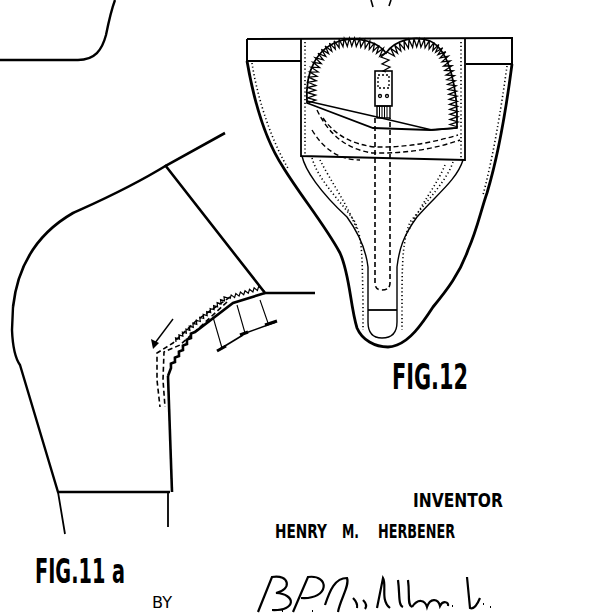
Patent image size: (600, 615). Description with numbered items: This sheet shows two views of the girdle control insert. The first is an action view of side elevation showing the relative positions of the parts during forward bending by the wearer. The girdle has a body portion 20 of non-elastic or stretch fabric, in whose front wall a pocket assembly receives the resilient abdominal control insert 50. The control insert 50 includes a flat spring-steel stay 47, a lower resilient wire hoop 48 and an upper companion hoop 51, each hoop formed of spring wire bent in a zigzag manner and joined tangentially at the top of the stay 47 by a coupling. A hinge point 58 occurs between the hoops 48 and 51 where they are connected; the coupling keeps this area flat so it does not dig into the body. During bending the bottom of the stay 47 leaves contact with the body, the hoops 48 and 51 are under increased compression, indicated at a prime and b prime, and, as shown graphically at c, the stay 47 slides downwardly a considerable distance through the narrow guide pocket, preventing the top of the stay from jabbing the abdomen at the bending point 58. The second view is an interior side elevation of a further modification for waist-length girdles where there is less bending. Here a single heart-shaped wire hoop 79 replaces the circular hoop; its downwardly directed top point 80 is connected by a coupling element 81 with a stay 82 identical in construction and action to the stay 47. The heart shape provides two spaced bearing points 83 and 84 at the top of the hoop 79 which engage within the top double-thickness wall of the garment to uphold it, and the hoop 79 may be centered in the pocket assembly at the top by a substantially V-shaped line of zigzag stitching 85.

In FIG. 11A, the body portion 20 is at (121, 216).
In FIG. 11A, the stay 47 is at (173, 366).
In FIG. 11A, the lower resilient wire hoop 48 is at (208, 307).
In FIG. 11A, the control insert 50 is at (215, 285).
In FIG. 11A, the upper companion hoop 51 is at (258, 285).
In FIG. 11A, the hinge point 58 is at (230, 296).
In FIG. 12, the heart-shaped wire hoop 79 is at (460, 104).
In FIG. 12, the downwardly directed top point 80 is at (374, 76).
In FIG. 12, the coupling element 81 is at (393, 88).
In FIG. 12, the stay 82 is at (393, 112).
In FIG. 12, the bearing point 83 is at (348, 39).
In FIG. 12, the bearing point 84 is at (427, 39).
In FIG. 12, the V-shaped line of zigzag stitching 85 is at (388, 44).